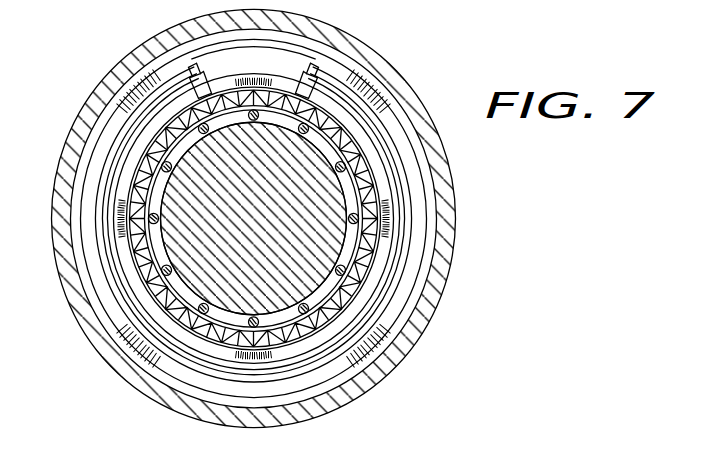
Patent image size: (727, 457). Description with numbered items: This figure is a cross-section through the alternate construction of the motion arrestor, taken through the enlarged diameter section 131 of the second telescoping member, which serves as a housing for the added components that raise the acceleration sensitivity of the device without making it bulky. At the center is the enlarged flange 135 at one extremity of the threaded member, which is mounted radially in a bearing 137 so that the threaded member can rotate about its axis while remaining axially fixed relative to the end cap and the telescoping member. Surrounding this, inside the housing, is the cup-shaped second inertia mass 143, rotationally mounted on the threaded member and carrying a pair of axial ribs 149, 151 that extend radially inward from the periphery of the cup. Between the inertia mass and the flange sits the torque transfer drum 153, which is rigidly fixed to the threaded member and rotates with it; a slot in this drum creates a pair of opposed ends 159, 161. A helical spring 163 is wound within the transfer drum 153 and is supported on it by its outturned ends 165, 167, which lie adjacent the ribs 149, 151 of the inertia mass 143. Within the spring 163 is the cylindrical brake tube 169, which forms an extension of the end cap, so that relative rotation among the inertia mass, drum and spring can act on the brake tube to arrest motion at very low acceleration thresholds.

The enlarged diameter section 131 is at (378, 63).
The enlarged flange 135 is at (264, 231).
The bearing 137 is at (212, 293).
The second inertia mass 143 is at (412, 186).
The axial rib 149 is at (190, 78).
The axial rib 151 is at (320, 76).
The torque transfer drum 153 is at (393, 264).
The opposed end 159 is at (190, 82).
The opposed end 161 is at (297, 73).
The helical spring 163 is at (390, 229).
The outturned end 165 is at (198, 65).
The outturned end 167 is at (305, 67).
The cylindrical brake tube 169 is at (340, 302).